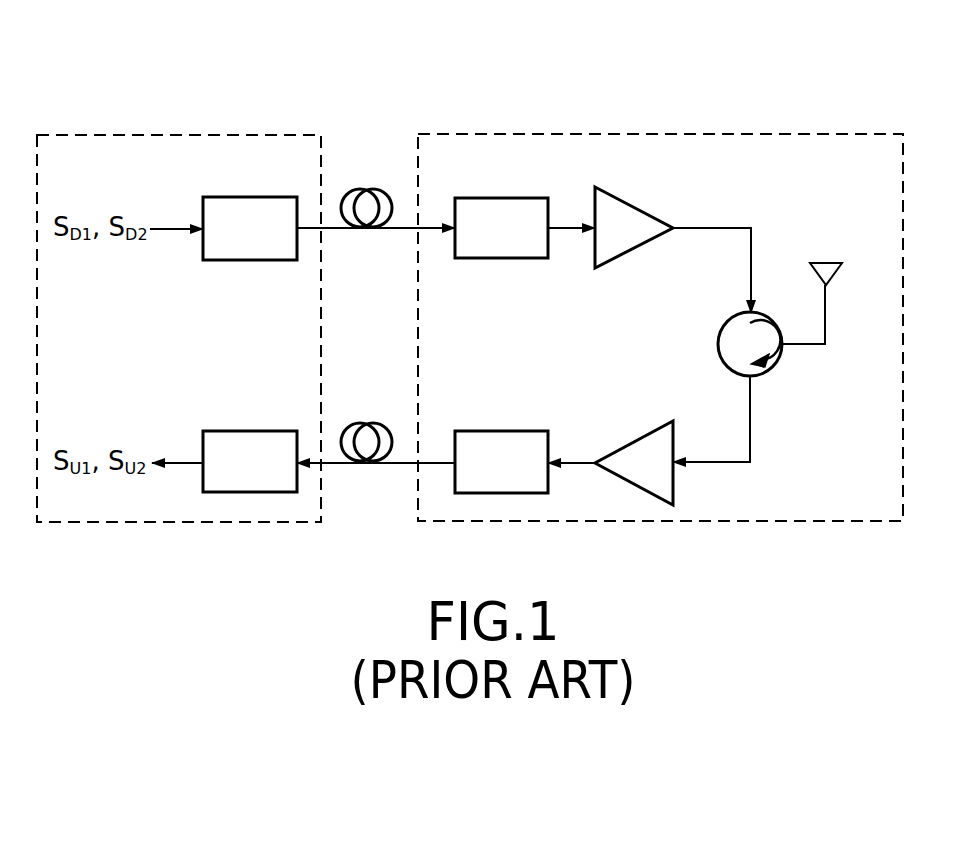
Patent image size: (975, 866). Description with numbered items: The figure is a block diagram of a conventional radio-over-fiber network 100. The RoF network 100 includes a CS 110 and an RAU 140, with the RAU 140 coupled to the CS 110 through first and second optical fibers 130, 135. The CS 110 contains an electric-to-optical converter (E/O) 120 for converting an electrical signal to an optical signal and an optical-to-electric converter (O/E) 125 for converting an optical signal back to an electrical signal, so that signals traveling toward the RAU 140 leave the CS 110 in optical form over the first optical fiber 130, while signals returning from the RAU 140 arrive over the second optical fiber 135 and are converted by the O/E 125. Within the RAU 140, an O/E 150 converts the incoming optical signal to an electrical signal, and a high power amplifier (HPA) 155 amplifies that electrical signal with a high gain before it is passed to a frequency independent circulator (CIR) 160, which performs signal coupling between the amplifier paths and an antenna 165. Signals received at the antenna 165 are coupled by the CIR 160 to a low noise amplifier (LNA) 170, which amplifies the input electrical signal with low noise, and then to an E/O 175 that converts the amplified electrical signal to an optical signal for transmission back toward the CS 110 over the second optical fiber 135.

The radio-over-fiber network 100 is at (477, 36).
The CS 110 is at (176, 135).
The electric-to-optical converter (E/O) 120 is at (252, 197).
The optical-to-electric converter (O/E) 125 is at (252, 431).
The first optical fiber 130 is at (373, 188).
The second optical fiber 135 is at (373, 423).
The RAU 140 is at (648, 134).
The O/E 150 is at (503, 198).
The high power amplifier (HPA) 155 is at (635, 205).
The frequency independent circulator (CIR) 160 is at (718, 344).
The antenna 165 is at (836, 268).
The low noise amplifier (LNA) 170 is at (643, 435).
The E/O 175 is at (503, 431).